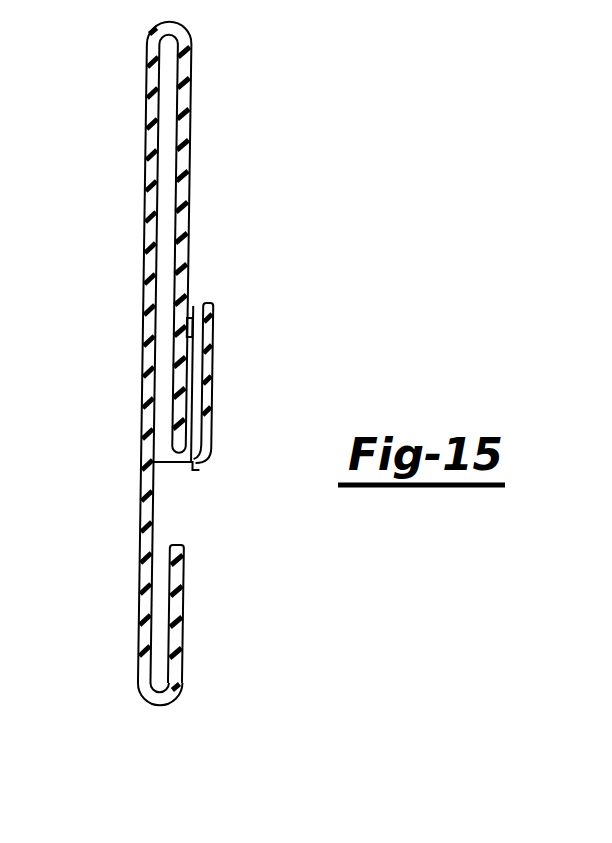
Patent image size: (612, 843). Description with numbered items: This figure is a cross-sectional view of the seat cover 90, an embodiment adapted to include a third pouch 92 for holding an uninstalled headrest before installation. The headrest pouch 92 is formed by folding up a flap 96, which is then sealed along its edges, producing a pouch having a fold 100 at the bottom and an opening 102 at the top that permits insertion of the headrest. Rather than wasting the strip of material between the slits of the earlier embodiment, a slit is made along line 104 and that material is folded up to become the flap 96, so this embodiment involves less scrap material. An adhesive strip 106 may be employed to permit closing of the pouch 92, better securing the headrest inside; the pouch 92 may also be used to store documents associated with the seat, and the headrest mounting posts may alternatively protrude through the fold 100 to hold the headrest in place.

The seat cover 90 is at (136, 48).
The headrest pouch 92 is at (240, 266).
The flap 96 is at (210, 400).
The fold 100 is at (199, 470).
The opening 102 is at (198, 312).
The line 104 is at (179, 546).
The adhesive strip 106 is at (190, 331).